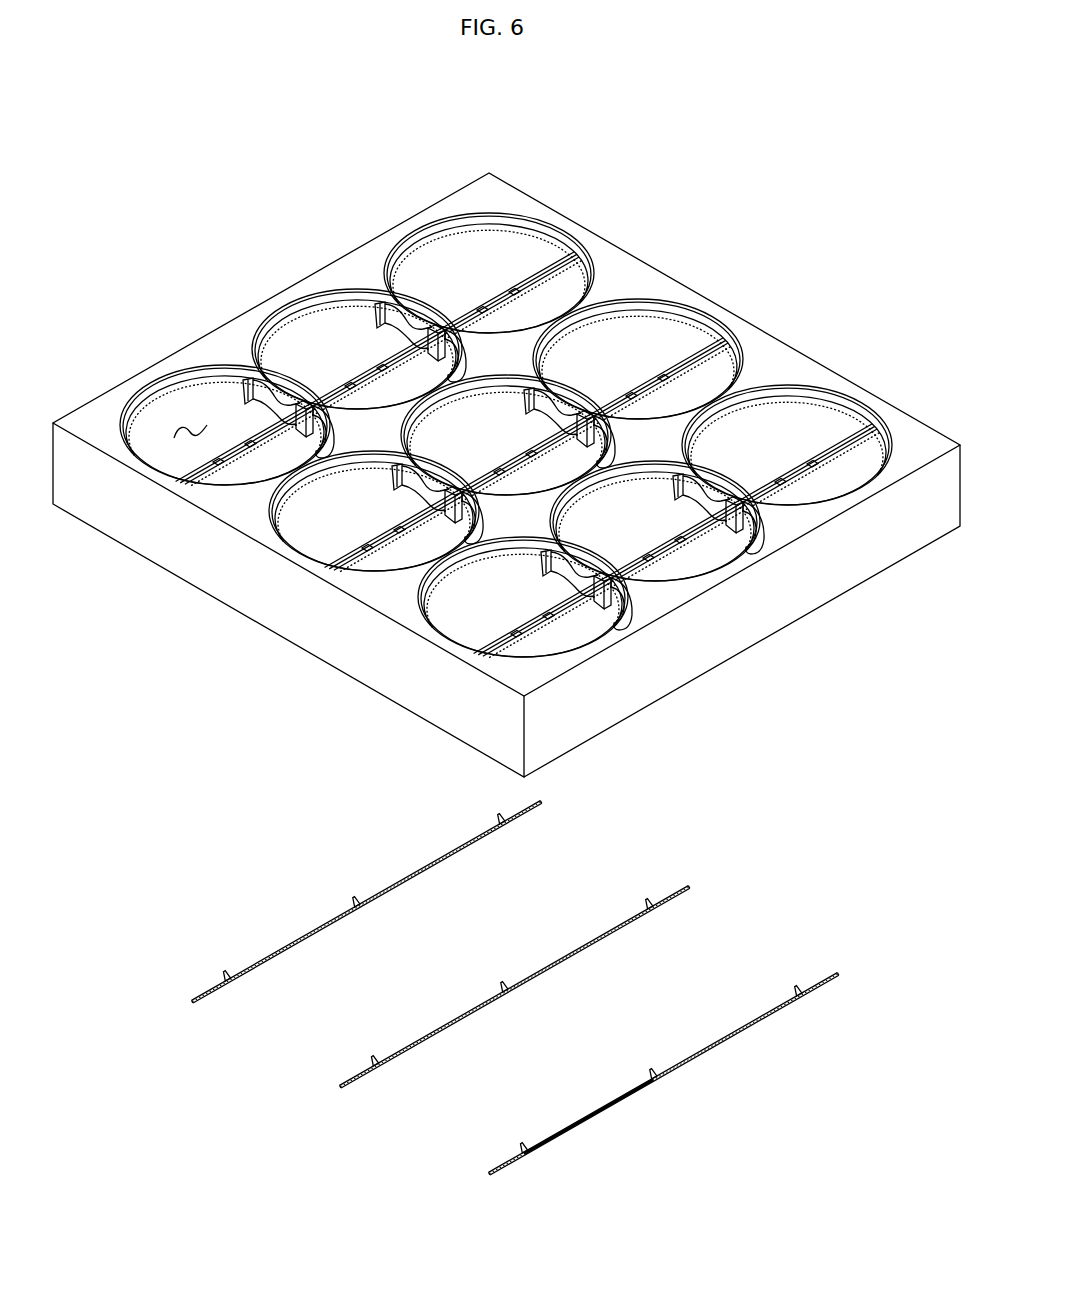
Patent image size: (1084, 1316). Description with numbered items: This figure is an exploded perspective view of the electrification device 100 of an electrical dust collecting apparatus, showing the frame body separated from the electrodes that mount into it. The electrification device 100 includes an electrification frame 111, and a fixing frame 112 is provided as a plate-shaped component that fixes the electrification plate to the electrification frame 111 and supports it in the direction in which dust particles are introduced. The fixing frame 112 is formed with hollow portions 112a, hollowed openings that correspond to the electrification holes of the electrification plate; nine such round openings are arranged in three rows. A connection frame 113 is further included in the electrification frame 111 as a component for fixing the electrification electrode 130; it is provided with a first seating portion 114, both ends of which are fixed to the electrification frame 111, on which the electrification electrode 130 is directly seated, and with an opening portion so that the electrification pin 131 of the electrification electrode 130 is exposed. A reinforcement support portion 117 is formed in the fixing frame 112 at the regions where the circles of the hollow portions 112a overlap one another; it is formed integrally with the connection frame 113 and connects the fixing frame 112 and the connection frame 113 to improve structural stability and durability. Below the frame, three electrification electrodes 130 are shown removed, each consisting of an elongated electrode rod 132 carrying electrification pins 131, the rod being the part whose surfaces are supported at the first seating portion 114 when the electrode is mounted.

The electrification device 100 is at (614, 162).
The electrification frame 111 is at (145, 520).
The fixing frame 112 is at (93, 400).
The hollow portion 112a is at (193, 425).
The connection frame 113 is at (249, 389).
The first seating portion 114 is at (373, 373).
The reinforcement support portion 117 is at (275, 392).
The electrification electrode 130 is at (509, 984).
The electrification pin 131 is at (228, 979).
The electrode rod 132 is at (268, 955).